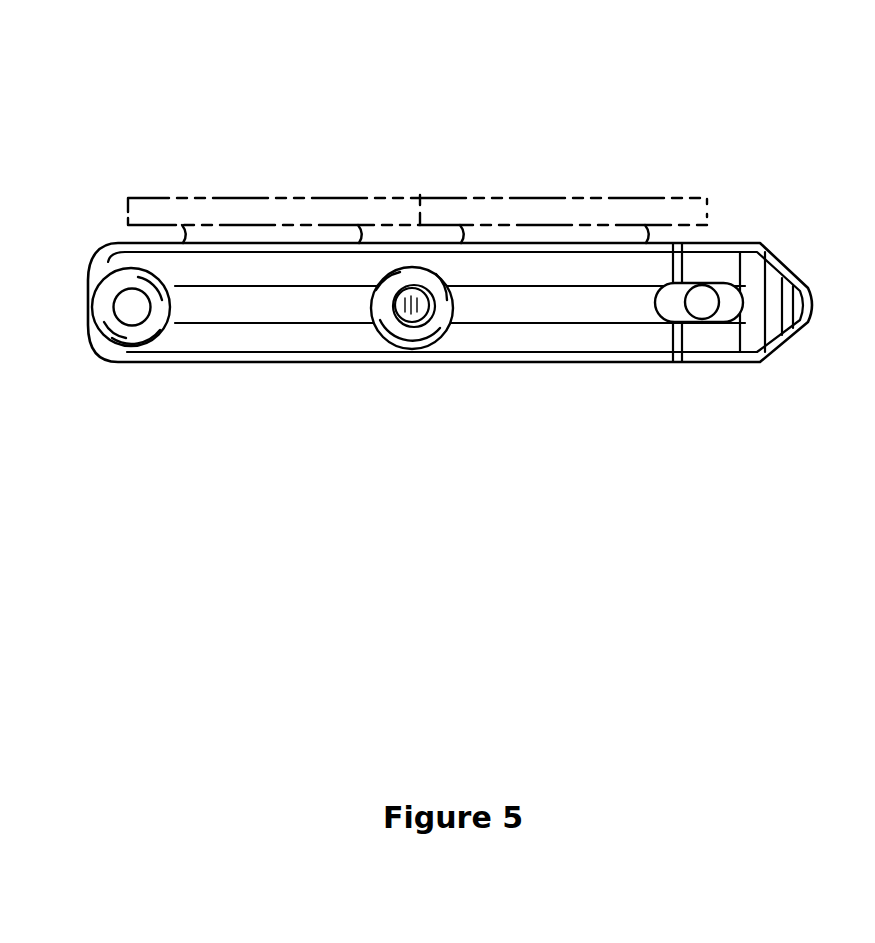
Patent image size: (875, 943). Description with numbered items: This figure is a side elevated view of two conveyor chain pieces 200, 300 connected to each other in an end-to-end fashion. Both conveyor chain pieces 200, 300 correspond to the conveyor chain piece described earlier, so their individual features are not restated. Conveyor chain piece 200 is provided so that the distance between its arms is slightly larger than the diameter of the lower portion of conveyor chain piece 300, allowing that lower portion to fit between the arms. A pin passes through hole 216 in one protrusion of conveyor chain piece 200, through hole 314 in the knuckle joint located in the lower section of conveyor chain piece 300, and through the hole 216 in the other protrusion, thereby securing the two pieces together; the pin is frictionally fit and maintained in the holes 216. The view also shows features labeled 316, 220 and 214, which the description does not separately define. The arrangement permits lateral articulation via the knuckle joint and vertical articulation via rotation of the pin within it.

The conveyor chain piece 200 is at (610, 116).
The conveyor chain piece 300 is at (273, 116).
The left hub 316 is at (132, 307).
The central hub ring 220 is at (393, 336).
The hole 216 is at (413, 312).
The hole 314 is at (431, 303).
The end pin 214 is at (701, 305).